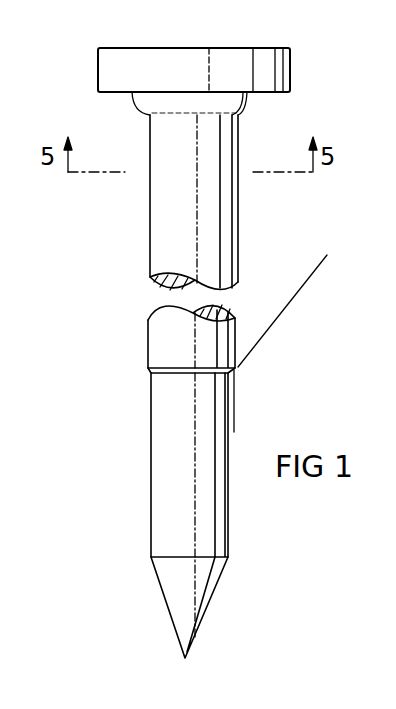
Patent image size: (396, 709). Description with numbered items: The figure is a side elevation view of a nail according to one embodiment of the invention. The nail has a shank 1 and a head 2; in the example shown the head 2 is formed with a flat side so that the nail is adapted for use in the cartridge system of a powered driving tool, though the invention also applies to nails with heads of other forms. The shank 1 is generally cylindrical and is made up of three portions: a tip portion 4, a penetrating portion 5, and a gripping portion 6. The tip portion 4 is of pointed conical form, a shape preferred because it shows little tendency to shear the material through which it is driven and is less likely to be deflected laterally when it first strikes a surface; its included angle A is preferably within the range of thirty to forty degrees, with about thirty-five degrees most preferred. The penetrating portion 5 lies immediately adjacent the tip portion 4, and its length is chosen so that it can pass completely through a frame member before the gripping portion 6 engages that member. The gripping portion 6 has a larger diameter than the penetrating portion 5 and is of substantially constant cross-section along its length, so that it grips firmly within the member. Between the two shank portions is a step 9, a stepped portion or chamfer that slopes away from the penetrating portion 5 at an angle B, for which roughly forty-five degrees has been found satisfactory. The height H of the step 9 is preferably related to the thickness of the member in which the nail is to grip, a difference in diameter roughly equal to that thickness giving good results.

The shank 1 is at (148, 340).
The head 2 is at (146, 63).
The tip portion 4 is at (173, 570).
The penetrating portion 5 is at (168, 473).
The gripping portion 6 is at (163, 220).
The step 9 is at (176, 372).
The included angle A is at (238, 632).
The angle B is at (318, 266).
The height H is at (183, 413).